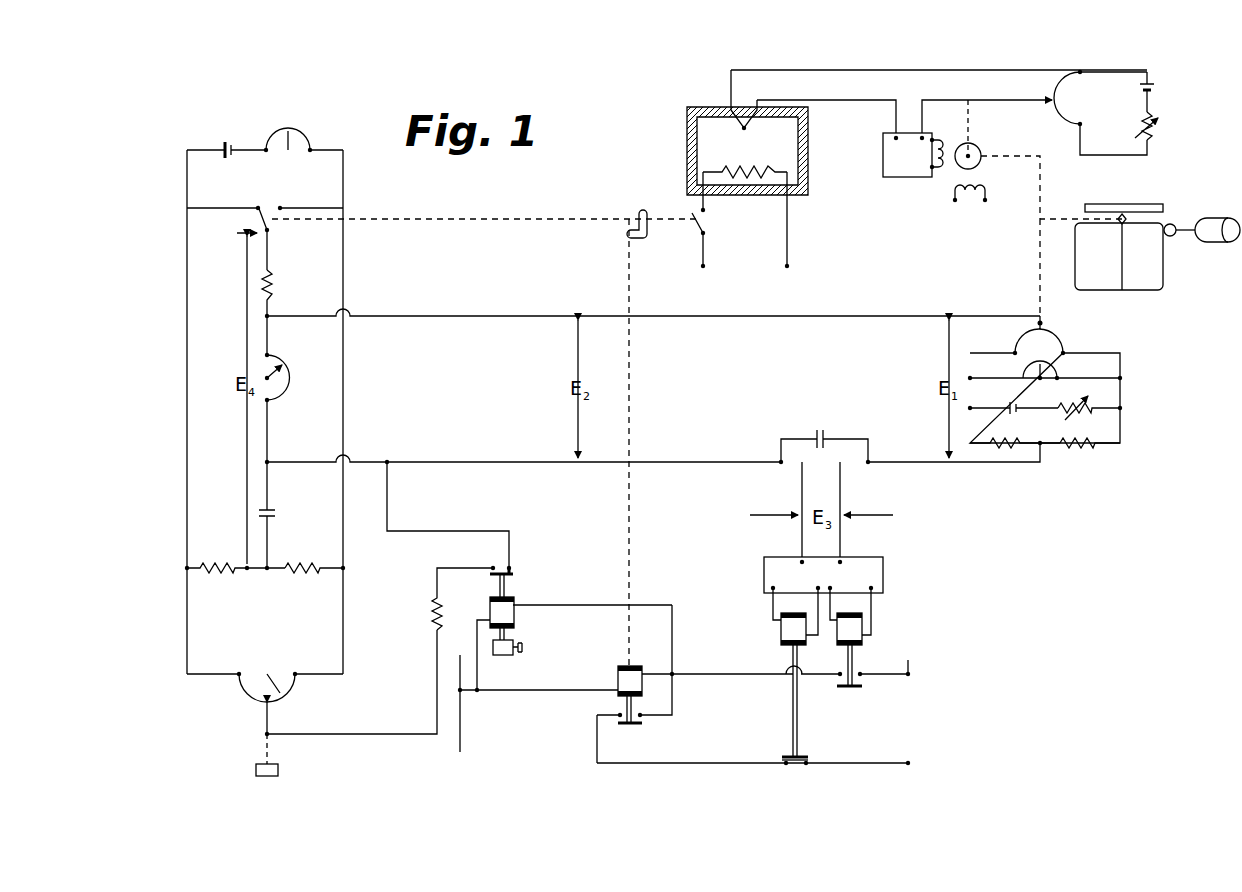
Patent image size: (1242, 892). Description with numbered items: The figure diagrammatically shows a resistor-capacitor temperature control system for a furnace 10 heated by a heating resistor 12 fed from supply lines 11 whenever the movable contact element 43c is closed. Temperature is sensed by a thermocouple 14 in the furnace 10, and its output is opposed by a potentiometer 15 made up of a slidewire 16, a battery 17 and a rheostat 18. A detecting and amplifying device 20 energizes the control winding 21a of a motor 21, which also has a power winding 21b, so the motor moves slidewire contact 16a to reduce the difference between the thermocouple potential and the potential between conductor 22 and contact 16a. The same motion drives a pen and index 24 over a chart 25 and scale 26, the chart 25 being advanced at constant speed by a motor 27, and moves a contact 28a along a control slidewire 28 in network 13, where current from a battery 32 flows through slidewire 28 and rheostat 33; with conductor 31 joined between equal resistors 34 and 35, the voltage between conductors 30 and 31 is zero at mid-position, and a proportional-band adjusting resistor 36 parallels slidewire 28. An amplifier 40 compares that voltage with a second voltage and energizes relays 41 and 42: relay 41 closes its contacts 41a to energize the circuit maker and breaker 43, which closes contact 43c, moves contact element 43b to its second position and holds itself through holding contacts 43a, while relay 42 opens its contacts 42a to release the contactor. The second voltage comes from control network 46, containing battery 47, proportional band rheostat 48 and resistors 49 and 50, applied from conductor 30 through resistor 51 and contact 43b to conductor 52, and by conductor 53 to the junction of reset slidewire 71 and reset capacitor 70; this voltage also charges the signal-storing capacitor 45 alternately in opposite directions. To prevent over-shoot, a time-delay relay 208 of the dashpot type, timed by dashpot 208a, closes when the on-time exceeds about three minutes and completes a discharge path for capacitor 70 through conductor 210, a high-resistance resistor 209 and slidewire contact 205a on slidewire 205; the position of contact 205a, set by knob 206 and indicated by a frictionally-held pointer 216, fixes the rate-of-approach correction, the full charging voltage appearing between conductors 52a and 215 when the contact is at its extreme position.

The furnace 10 is at (697, 162).
The supply lines 11 is at (703, 247).
The heating resistor 12 is at (752, 167).
The network 13 is at (1164, 364).
The thermocouple 14 is at (730, 124).
The potentiometer 15 is at (1125, 136).
The slidewire 16 is at (1062, 100).
The slidewire contact 16a is at (1046, 103).
The battery 17 is at (1149, 82).
The rheostat 18 is at (1152, 132).
The detecting and amplifying device 20 is at (921, 166).
The motor 21 is at (972, 151).
The control winding 21a is at (942, 176).
The power winding 21b is at (980, 192).
The conductor 22 is at (986, 71).
The pen and index 24 is at (1126, 216).
The chart 25 is at (1158, 274).
The scale 26 is at (1098, 203).
The motor 27 is at (1212, 220).
The control slidewire 28 is at (1020, 338).
The movable contact 28a is at (1044, 323).
The conductor 30 is at (800, 316).
The conductor 31 is at (912, 465).
The battery 32 is at (1008, 405).
The rheostat 33 is at (1092, 403).
The resistor 34 is at (1013, 442).
The resistor 35 is at (1080, 450).
The proportional-band adjusting resistor 36 is at (1060, 368).
The amplifier 40 is at (875, 574).
The relay 41 is at (864, 626).
The contacts 41a is at (845, 690).
The relay 42 is at (780, 633).
The contacts 42a is at (797, 766).
The circuit maker and breaker 43 is at (624, 672).
The holding contacts 43a is at (633, 725).
The contact element 43b is at (264, 206).
The movable contact element 43c is at (696, 235).
The capacitor 45 is at (830, 433).
The control network 46 is at (225, 452).
The battery 47 is at (226, 146).
The adjustable proportional band rheostat 48 is at (302, 134).
The resistor 49 is at (216, 575).
The resistor 50 is at (308, 575).
The resistor 51 is at (274, 290).
The conductor 52 is at (187, 326).
The conductor 52a is at (343, 603).
The conductor 53 is at (720, 464).
The reset capacitor 70 is at (274, 512).
The reset slidewire 71 is at (287, 388).
The slidewire 205 is at (252, 705).
The slidewire contact 205a is at (270, 722).
The knob 206 is at (273, 776).
The time-delay relay 208 is at (509, 610).
The dashpot 208a is at (510, 654).
The high-resistance resistor 209 is at (432, 616).
The conductor 210 is at (453, 531).
The conductor 215 is at (345, 736).
The pointer 216 is at (275, 680).